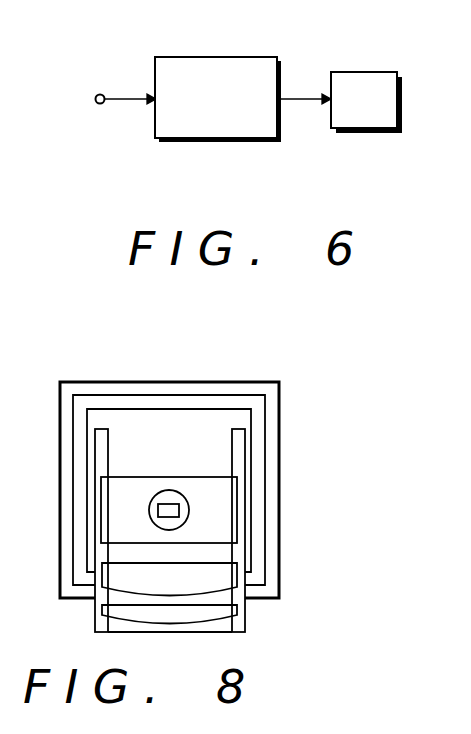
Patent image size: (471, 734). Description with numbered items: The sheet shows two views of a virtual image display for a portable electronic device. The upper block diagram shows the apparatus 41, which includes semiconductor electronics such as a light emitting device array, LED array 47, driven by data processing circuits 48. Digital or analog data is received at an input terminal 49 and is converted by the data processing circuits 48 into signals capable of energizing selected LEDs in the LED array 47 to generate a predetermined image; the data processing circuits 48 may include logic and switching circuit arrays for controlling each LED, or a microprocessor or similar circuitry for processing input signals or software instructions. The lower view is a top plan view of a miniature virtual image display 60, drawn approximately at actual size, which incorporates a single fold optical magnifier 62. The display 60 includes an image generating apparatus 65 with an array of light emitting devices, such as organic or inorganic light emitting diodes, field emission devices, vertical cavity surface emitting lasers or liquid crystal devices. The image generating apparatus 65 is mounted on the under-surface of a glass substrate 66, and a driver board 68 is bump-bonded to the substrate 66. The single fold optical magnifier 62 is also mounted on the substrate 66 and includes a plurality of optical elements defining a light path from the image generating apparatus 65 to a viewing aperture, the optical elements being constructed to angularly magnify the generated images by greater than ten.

In FIG. 6, the apparatus 41 is at (229, 207).
In FIG. 6, the LED array 47 is at (364, 72).
In FIG. 6, the data processing circuits 48 is at (218, 57).
In FIG. 6, the input terminal 49 is at (100, 93).
In FIG. 8, the miniature virtual image display 60 is at (361, 579).
In FIG. 8, the single fold optical magnifier 62 is at (263, 605).
In FIG. 8, the image generating apparatus 65 is at (172, 510).
In FIG. 8, the glass substrate 66 is at (195, 425).
In FIG. 8, the driver board 68 is at (280, 432).